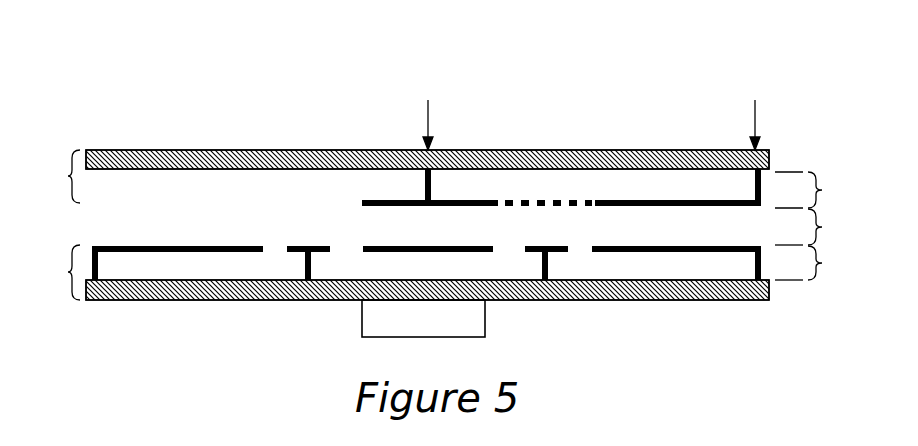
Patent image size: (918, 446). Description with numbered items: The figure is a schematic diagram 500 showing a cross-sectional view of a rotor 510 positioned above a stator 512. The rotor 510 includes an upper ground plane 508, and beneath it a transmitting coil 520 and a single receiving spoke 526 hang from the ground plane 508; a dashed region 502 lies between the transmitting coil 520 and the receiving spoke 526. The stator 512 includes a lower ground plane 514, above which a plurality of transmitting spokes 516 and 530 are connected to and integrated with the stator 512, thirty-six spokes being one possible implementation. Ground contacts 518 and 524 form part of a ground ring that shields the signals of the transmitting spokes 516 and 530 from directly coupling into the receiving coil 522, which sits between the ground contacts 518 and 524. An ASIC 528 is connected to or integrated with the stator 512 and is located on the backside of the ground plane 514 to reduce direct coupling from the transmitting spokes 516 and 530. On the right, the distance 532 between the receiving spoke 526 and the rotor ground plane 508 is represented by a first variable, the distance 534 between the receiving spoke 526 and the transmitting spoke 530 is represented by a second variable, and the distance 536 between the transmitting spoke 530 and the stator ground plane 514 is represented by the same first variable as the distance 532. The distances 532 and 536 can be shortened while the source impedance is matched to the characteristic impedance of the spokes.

The schematic diagram 500 is at (168, 76).
The gap / connection region (dashed) 502 is at (553, 199).
The ground plane 508 is at (205, 150).
The rotor 510 is at (398, 175).
The stator 512 is at (398, 276).
The ground plane 514 is at (240, 300).
The transmitting spoke 516 is at (171, 246).
The ground contact 518 is at (301, 246).
The transmitting coil 520 is at (393, 206).
The receiving coil 522 is at (466, 246).
The ground contact 524 is at (549, 246).
The receiving spoke 526 is at (622, 206).
The ASIC 528 is at (441, 330).
The transmitting spoke 530 is at (721, 246).
The distance 532 is at (822, 190).
The distance 534 is at (822, 227).
The distance 536 is at (822, 263).